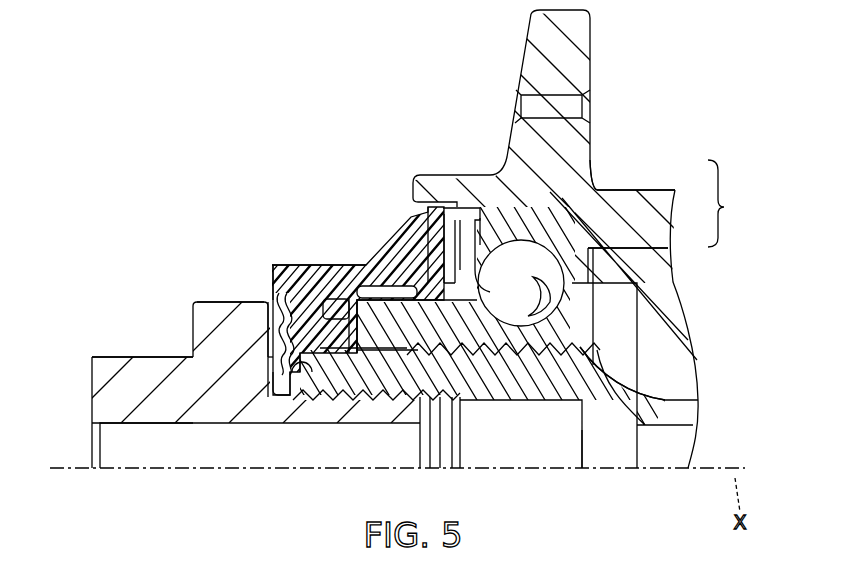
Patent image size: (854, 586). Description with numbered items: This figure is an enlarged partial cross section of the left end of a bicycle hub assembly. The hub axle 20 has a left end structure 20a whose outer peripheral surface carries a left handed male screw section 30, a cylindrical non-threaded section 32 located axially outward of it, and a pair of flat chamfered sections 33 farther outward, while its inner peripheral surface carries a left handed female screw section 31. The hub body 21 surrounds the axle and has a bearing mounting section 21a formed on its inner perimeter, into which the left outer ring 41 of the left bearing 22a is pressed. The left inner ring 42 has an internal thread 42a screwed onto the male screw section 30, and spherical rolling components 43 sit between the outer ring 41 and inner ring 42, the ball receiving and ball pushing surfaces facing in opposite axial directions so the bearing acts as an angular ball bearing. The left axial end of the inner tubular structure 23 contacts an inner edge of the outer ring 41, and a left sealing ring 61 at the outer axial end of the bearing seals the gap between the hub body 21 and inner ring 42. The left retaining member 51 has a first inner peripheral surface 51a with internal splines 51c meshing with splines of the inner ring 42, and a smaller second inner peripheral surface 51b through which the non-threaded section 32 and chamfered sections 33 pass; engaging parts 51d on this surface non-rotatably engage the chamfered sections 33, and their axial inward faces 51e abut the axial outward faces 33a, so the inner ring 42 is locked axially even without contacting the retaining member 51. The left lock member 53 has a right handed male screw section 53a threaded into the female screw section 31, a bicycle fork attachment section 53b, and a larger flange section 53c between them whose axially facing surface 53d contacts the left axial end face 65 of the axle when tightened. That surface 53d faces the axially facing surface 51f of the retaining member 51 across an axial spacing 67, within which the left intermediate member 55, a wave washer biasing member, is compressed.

The hub axle 20 is at (680, 396).
The left end structure 20a is at (610, 448).
The hub body 21 is at (612, 137).
The bearing mounting section 21a is at (562, 192).
The left bearing 22a is at (737, 203).
The inner tubular structure 23 is at (667, 325).
The male screw section 30 is at (540, 350).
The female screw section 31 is at (408, 396).
The non-threaded section 32 is at (393, 345).
The chamfered section 33 is at (320, 378).
The axial outward face 33a is at (308, 300).
The left outer ring 41 is at (565, 200).
The left inner ring 42 is at (545, 265).
The internal thread 42a is at (478, 353).
The rolling component 43 is at (572, 258).
The left retaining member 51 is at (362, 253).
The first inner peripheral surface 51a is at (321, 300).
The second inner peripheral surface 51b is at (342, 358).
The internal spline 51c is at (368, 282).
The engaging part 51d is at (310, 372).
The axial inward face 51e is at (350, 372).
The axially facing surface 51f is at (291, 375).
The left lock member 53 is at (205, 292).
The male screw section 53a is at (415, 410).
The bicycle fork attachment section 53b is at (135, 388).
The flange section 53c is at (208, 322).
The axially facing surface 53d is at (275, 268).
The left intermediate member 55 is at (272, 296).
The left sealing ring 61 is at (462, 205).
The left axial end face 65 is at (272, 375).
The axial spacing 67 is at (270, 343).